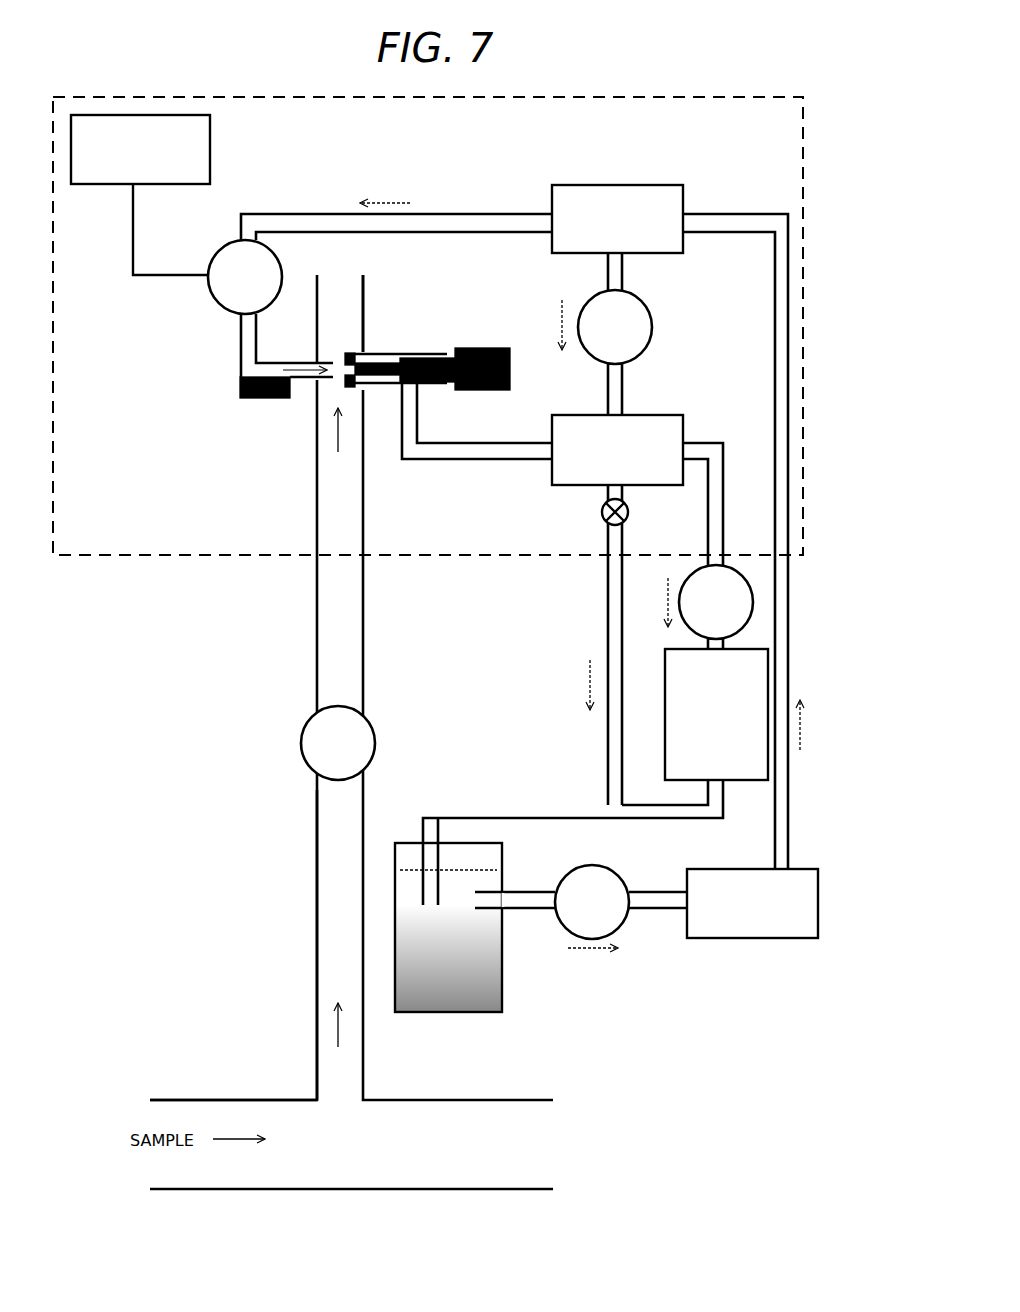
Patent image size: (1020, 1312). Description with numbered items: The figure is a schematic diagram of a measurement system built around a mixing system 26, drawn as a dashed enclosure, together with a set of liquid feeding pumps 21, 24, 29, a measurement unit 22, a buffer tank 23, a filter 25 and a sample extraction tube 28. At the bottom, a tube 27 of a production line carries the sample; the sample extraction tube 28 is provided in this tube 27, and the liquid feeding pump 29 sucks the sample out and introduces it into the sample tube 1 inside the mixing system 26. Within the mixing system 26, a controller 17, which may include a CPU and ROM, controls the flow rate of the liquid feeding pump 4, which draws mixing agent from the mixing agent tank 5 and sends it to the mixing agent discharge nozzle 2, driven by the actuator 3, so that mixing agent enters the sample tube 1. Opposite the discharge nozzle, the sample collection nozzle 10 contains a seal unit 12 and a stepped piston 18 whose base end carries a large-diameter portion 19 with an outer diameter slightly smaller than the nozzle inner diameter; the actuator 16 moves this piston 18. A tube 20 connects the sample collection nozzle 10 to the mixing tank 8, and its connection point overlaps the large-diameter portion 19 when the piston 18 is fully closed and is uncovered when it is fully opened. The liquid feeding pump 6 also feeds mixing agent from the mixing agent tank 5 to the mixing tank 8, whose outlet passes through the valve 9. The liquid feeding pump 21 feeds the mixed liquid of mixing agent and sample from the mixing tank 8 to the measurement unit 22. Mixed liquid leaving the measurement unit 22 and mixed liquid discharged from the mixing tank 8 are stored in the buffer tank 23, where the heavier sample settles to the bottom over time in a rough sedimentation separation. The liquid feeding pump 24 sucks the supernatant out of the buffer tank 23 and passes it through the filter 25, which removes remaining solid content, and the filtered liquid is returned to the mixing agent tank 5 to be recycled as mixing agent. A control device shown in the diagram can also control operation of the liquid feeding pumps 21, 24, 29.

The sample tube 1 is at (316, 440).
The mixing agent discharge nozzle 2 is at (312, 381).
The actuator 3 is at (250, 398).
The liquid feeding pump 4 is at (210, 262).
The mixing agent tank 5 is at (615, 185).
The liquid feeding pump 6 is at (652, 322).
The mixing tank 8 is at (660, 415).
The valve 9 is at (602, 510).
The sample collection nozzle 10 is at (372, 385).
The seal unit 12 is at (353, 352).
The actuator 16 is at (475, 390).
The controller 17 is at (210, 150).
The piston 18 is at (377, 365).
The large-diameter portion 19 is at (425, 358).
The tube 20 is at (417, 390).
The liquid feeding pump 21 is at (686, 625).
The measurement unit 22 is at (665, 730).
The buffer tank 23 is at (440, 1012).
The liquid feeding pump 24 is at (620, 925).
The filter 25 is at (745, 938).
The mixing system 26 is at (140, 556).
The tube 27 is at (190, 1100).
The sample extraction tube 28 is at (315, 913).
The liquid feeding pump 29 is at (303, 748).